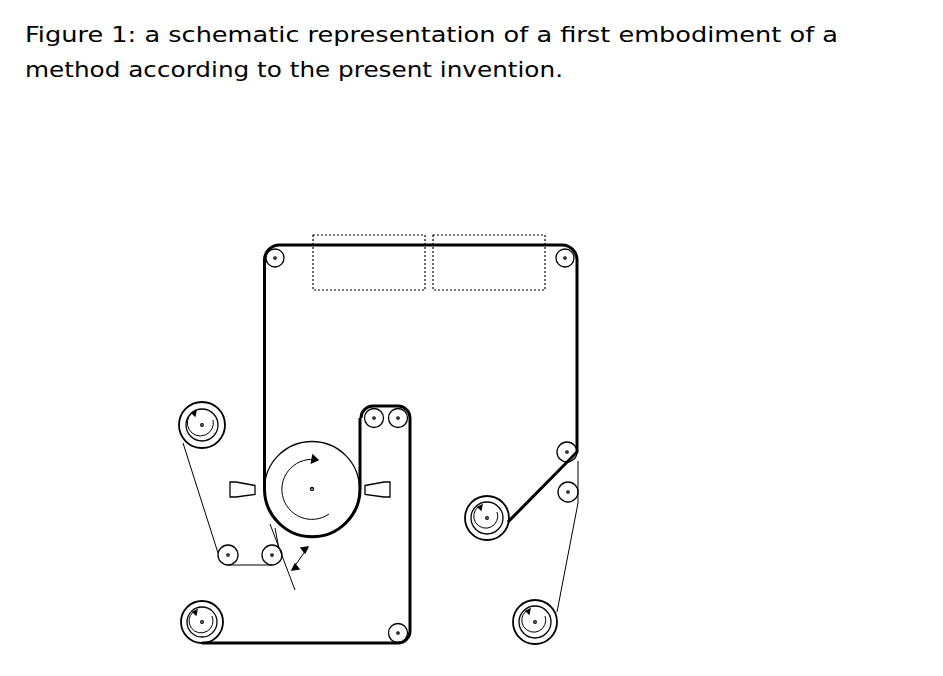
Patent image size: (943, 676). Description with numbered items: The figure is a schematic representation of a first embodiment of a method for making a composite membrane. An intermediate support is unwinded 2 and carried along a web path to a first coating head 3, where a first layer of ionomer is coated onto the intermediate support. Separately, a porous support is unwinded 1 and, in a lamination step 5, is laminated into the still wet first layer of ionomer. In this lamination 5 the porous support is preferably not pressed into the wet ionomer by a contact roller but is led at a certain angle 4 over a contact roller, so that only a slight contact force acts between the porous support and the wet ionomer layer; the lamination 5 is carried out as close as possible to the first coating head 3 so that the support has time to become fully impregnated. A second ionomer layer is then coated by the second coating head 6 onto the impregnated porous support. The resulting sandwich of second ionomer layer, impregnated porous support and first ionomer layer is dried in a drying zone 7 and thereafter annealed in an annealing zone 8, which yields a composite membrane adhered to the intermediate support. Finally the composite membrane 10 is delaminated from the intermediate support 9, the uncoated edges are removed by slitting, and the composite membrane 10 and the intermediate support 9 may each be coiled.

The porous support unwinding 1 is at (198, 408).
The intermediate support unwinding 2 is at (191, 609).
The first coating head 3 is at (328, 489).
The angle 4 is at (306, 566).
The lamination 5 is at (269, 549).
The second coating head 6 is at (242, 475).
The drying zone 7 is at (369, 262).
The annealing zone 8 is at (489, 262).
The intermediate support 9 is at (487, 502).
The composite membrane 10 is at (556, 627).